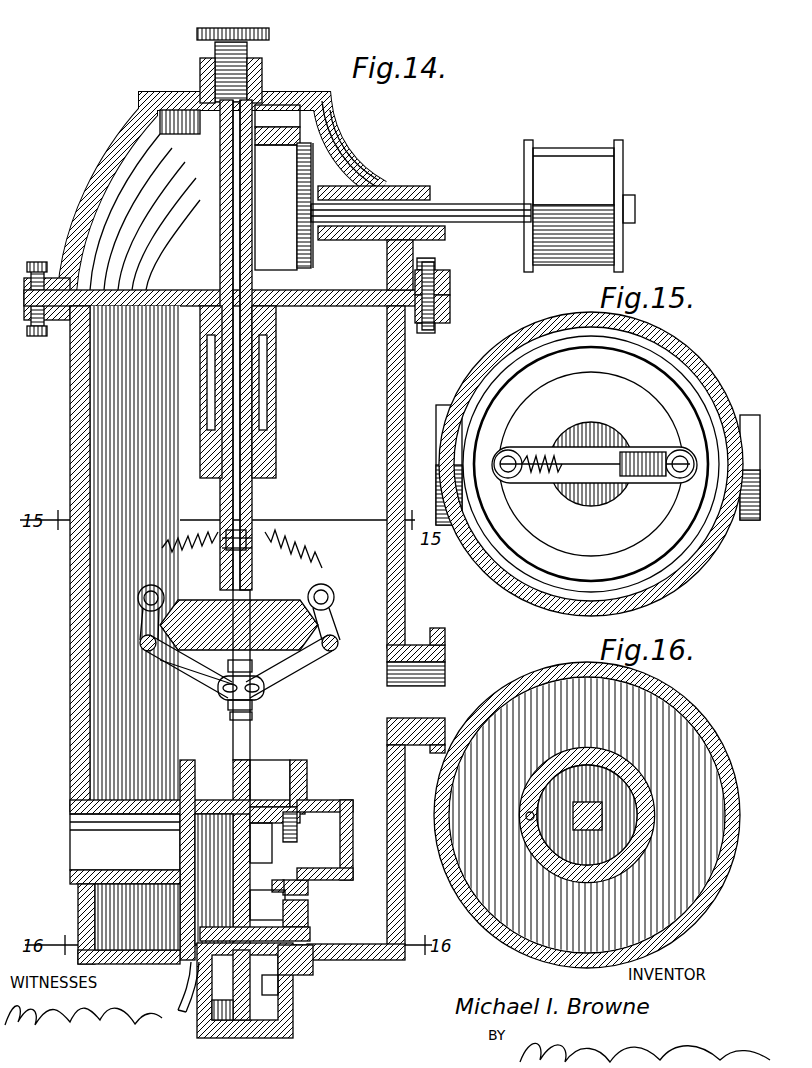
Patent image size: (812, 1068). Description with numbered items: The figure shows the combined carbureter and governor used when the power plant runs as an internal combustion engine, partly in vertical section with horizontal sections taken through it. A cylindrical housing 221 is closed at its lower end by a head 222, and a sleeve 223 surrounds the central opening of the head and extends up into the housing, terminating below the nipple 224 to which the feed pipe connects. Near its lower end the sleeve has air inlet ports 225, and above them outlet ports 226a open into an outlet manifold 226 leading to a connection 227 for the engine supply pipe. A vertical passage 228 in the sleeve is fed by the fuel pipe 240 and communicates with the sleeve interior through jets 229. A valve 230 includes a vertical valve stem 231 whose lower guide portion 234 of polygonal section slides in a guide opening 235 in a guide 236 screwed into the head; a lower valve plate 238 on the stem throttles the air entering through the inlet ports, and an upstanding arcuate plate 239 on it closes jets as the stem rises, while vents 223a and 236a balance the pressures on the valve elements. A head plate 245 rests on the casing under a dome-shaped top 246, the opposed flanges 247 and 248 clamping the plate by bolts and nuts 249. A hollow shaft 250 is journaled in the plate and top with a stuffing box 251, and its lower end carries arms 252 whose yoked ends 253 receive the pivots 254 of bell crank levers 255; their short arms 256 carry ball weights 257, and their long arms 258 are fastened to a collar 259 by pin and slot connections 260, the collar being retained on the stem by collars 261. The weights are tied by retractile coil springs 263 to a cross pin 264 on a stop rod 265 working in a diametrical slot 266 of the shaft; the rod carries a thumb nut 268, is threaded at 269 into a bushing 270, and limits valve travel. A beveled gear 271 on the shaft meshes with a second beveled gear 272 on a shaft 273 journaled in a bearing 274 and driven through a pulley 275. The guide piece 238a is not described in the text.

In FIG. 14, the cylindrical housing 221 is at (78, 684).
In FIG. 15, the cylindrical housing 221 is at (682, 585).
In FIG. 14, the head 222 is at (380, 960).
In FIG. 16, the head 222 is at (682, 902).
In FIG. 14, the sleeve 223 is at (300, 770).
In FIG. 15, the sleeve 223 is at (596, 520).
In FIG. 16, the sleeve 223 is at (576, 880).
In FIG. 14, the vent 223a is at (323, 934).
In FIG. 14, the nipple 224 is at (416, 640).
In FIG. 15, the nipple 224 is at (442, 622).
In FIG. 14, the air inlet ports 225 is at (308, 913).
In FIG. 14, the outlet manifold 226 is at (332, 800).
In FIG. 14, the outlet ports 226a is at (297, 838).
In FIG. 14, the connection 227 is at (82, 856).
In FIG. 15, the connection 227 is at (456, 545).
In FIG. 14, the vertical passage 228 is at (180, 912).
In FIG. 16, the vertical passage 228 is at (528, 822).
In FIG. 14, the jets 229 is at (195, 852).
In FIG. 14, the valve 230 is at (233, 748).
In FIG. 15, the valve 230 is at (592, 450).
In FIG. 14, the valve stem 231 is at (252, 770).
In FIG. 14, the guide portion 234 is at (268, 800).
In FIG. 16, the guide portion 234 is at (604, 810).
In FIG. 14, the guide opening 235 is at (313, 975).
In FIG. 14, the guide 236 is at (250, 1038).
In FIG. 14, the vent 236a is at (293, 992).
In FIG. 14, the lower valve plate 238 is at (284, 896).
In FIG. 14, the guide piece 238a is at (212, 1012).
In FIG. 14, the arcuate plate 239 is at (180, 895).
In FIG. 14, the fuel pipe 240 is at (186, 978).
In FIG. 14, the head plate 245 is at (196, 292).
In FIG. 14, the dome-shaped top 246 is at (352, 165).
In FIG. 14, the flange 247 is at (450, 275).
In FIG. 14, the flange 248 is at (450, 305).
In FIG. 14, the bolts and nuts 249 is at (436, 262).
In FIG. 14, the hollow shaft 250 is at (220, 226).
In FIG. 15, the hollow shaft 250 is at (575, 495).
In FIG. 14, the stuffing box 251 is at (270, 352).
In FIG. 14, the arms 252 is at (194, 600).
In FIG. 14, the yoke 253 is at (343, 630).
In FIG. 14, the pivots 254 is at (218, 684).
In FIG. 14, the bell crank levers 255 is at (140, 646).
In FIG. 14, the short arms 256 is at (140, 620).
In FIG. 14, the ball weights 257 is at (148, 584).
In FIG. 15, the ball weights 257 is at (498, 458).
In FIG. 14, the long arms 258 is at (387, 712).
In FIG. 14, the collar 259 is at (266, 688).
In FIG. 14, the pin and slot connections 260 is at (230, 706).
In FIG. 14, the collars 261 is at (276, 712).
In FIG. 14, the retractile coil springs 263 is at (282, 546).
In FIG. 15, the retractile coil springs 263 is at (648, 482).
In FIG. 14, the cross pin 264 is at (262, 532).
In FIG. 15, the cross pin 264 is at (612, 460).
In FIG. 14, the stop rod 265 is at (235, 530).
In FIG. 14, the diametrical slot 266 is at (250, 515).
In FIG. 14, the thumb nut 268 is at (197, 34).
In FIG. 14, the external thread 269 is at (215, 50).
In FIG. 14, the bushing 270 is at (250, 52).
In FIG. 14, the beveled gear 271 is at (273, 135).
In FIG. 14, the second beveled gear 272 is at (315, 160).
In FIG. 14, the shaft 273 is at (460, 204).
In FIG. 14, the bearing 274 is at (410, 188).
In FIG. 14, the pulley 275 is at (574, 152).